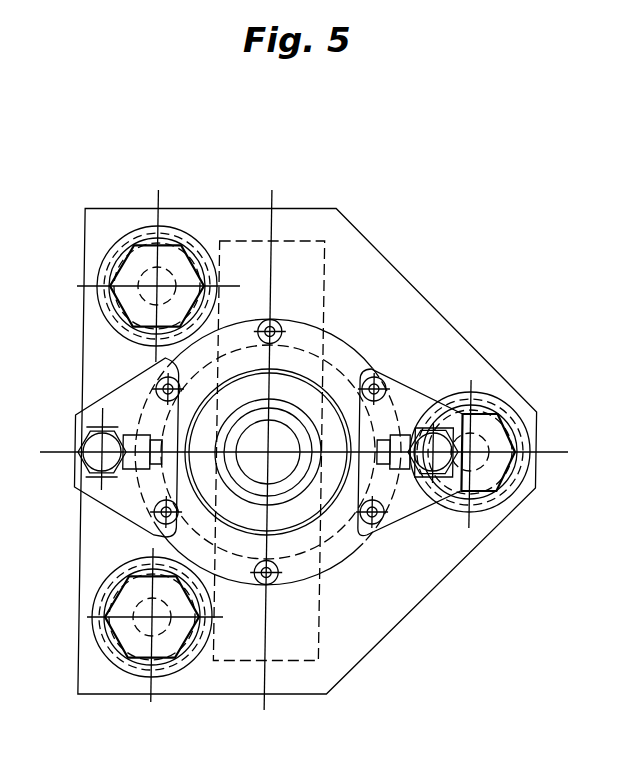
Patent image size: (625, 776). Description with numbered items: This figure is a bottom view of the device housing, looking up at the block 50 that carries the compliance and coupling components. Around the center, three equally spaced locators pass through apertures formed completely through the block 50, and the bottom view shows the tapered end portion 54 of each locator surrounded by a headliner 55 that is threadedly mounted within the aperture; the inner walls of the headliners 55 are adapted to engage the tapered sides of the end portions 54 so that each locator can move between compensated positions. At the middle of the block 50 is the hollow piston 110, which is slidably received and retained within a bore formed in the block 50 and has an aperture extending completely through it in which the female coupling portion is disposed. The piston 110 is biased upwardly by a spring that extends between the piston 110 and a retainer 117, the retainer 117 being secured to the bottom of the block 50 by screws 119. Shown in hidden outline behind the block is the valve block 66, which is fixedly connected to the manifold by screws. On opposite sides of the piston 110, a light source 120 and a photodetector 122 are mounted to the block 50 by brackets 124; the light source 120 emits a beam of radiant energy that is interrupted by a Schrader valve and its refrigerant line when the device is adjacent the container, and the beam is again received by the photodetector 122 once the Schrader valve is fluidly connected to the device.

The block 50 is at (375, 262).
The tapered end portion 54 is at (195, 250).
The headliner 55 is at (180, 228).
The valve block 66 is at (322, 241).
The hollow piston 110 is at (306, 382).
The retainer 117 is at (326, 333).
The screw 119 is at (278, 323).
The light source 120 is at (141, 468).
The photodetector 122 is at (399, 480).
The bracket 124 is at (106, 394).